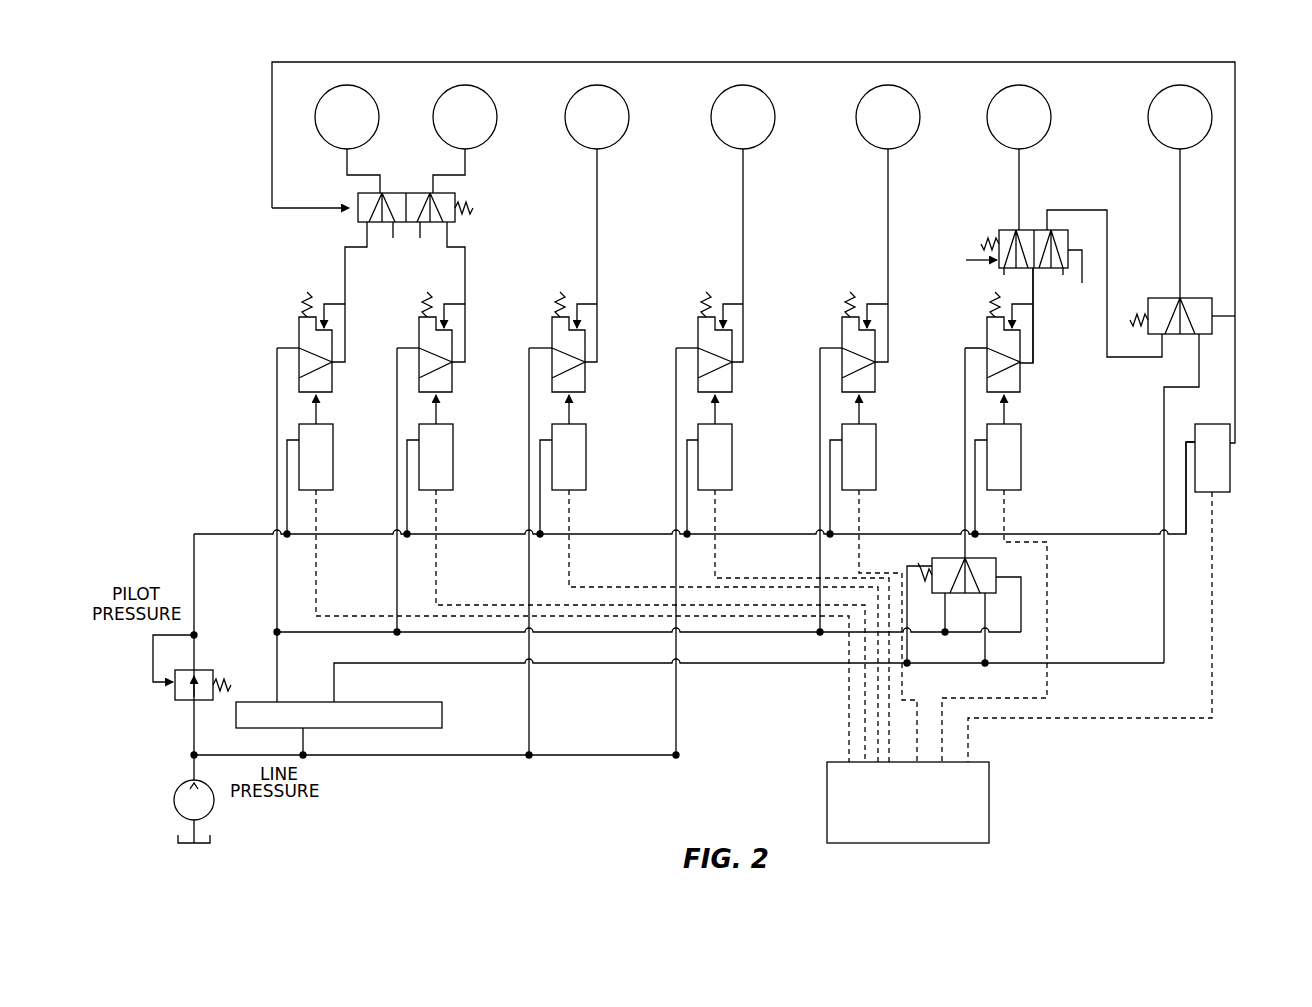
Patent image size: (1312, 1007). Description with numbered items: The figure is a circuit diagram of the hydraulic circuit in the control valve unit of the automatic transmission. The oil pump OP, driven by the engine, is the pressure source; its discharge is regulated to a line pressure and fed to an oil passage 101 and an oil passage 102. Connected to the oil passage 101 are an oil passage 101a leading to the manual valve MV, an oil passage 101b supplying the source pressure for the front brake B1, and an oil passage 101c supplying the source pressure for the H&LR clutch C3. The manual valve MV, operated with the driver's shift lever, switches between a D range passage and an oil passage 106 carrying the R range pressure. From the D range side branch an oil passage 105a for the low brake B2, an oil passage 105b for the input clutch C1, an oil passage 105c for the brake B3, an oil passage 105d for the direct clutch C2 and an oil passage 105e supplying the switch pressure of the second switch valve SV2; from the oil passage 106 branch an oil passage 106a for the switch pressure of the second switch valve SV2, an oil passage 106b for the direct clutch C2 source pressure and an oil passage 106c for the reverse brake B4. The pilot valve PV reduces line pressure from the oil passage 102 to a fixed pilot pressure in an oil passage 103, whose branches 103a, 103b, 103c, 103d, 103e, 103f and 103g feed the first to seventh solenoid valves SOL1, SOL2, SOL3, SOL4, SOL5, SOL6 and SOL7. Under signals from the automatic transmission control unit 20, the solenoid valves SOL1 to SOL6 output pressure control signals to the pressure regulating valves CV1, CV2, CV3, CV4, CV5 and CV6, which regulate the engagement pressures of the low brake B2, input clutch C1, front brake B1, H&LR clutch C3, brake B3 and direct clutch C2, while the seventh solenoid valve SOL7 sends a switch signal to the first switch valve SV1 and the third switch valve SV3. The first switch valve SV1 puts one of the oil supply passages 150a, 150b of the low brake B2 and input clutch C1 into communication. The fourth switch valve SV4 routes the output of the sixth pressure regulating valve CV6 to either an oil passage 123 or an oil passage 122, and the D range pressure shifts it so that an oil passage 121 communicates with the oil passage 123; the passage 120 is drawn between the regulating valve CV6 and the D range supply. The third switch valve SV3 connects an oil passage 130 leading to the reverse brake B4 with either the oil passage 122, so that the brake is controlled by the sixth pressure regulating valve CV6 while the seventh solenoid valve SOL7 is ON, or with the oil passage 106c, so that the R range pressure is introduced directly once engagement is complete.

The automatic transmission control unit 20 is at (992, 787).
The oil passage 101 is at (248, 755).
The oil passage 101a is at (310, 742).
The oil passage 101b is at (530, 707).
The oil passage 101c is at (677, 707).
The oil passage 102 is at (194, 712).
The oil passage 103 is at (248, 534).
The oil passage 103a is at (287, 440).
The oil passage 103b is at (407, 440).
The oil passage 103c is at (540, 440).
The oil passage 103d is at (687, 440).
The oil passage 103e is at (830, 440).
The oil passage 103f is at (975, 442).
The oil passage 103g is at (1186, 442).
The oil passage 105a is at (277, 565).
The oil passage 105b is at (397, 565).
The oil passage 105c is at (820, 574).
The oil passage 105d is at (945, 614).
The oil passage 105e is at (1022, 602).
The oil passage 106 is at (455, 665).
The oil passage 106a is at (907, 566).
The oil passage 106b is at (985, 643).
The oil passage 106c is at (1164, 592).
The oil passage 120 is at (965, 351).
The oil passage 121 is at (1035, 355).
The oil passage 122 is at (1108, 227).
The oil passage 123 is at (1018, 180).
The oil passage 130 is at (1181, 215).
The oil supply passage 150a is at (349, 165).
The oil supply passage 150b is at (468, 165).
The first switch valve SV1 is at (347, 198).
The second switch valve SV2 is at (1000, 563).
The third switch valve SV3 is at (1161, 296).
The fourth switch valve SV4 is at (1031, 227).
The first pressure regulating valve CV1 is at (296, 320).
The second pressure regulating valve CV2 is at (416, 320).
The third pressure regulating valve CV3 is at (550, 316).
The fourth pressure regulating valve CV4 is at (696, 320).
The fifth pressure regulating valve CV5 is at (840, 320).
The sixth pressure regulating valve CV6 is at (985, 322).
The first solenoid valve SOL1 is at (364, 402).
The second solenoid valve SOL2 is at (484, 402).
The third solenoid valve SOL3 is at (618, 404).
The fourth solenoid valve SOL4 is at (763, 404).
The fifth solenoid valve SOL5 is at (908, 404).
The sixth solenoid valve SOL6 is at (1062, 421).
The seventh solenoid valve SOL7 is at (1267, 412).
The pilot valve PV is at (228, 657).
The manual valve MV is at (443, 717).
The oil pump OP is at (217, 800).
The front brake B1 is at (605, 86).
The low brake B2 is at (355, 86).
The 2346 brake B3 is at (896, 86).
The reverse brake B4 is at (1188, 86).
The input clutch C1 is at (472, 86).
The direct clutch C2 is at (1028, 86).
The H&LR clutch C3 is at (752, 86).